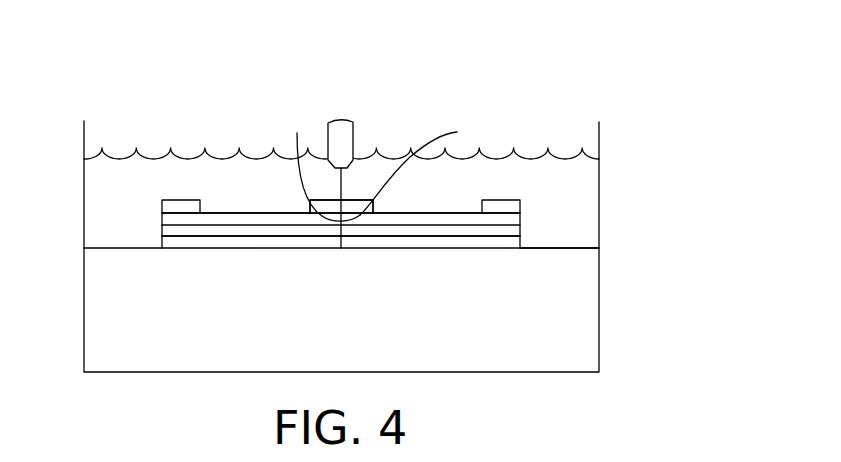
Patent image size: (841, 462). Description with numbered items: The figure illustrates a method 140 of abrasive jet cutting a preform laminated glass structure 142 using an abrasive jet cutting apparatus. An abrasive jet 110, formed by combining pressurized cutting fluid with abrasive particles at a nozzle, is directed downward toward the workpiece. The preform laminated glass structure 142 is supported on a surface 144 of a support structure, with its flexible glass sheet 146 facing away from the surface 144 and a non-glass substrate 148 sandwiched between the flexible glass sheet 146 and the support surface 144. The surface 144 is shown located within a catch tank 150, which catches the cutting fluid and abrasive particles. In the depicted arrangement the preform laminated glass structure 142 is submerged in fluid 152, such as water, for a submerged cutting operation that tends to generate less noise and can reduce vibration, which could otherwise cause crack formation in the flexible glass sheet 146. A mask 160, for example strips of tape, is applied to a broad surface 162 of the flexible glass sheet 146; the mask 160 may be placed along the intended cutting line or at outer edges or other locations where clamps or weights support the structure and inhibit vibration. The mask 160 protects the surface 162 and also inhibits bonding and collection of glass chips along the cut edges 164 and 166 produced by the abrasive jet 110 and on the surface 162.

The abrasive jet 110 is at (343, 183).
The method 140 is at (606, 47).
The preform laminated glass structure 142 is at (237, 277).
The surface 144 is at (560, 247).
The flexible glass sheet 146 is at (418, 218).
The non-glass substrate 148 is at (442, 243).
The catch tank 150 is at (621, 167).
The fluid 152 is at (132, 180).
The mask 160 is at (353, 208).
The broad surface 162 is at (247, 212).
The cut edge 164 is at (320, 161).
The cut edge 166 is at (425, 166).